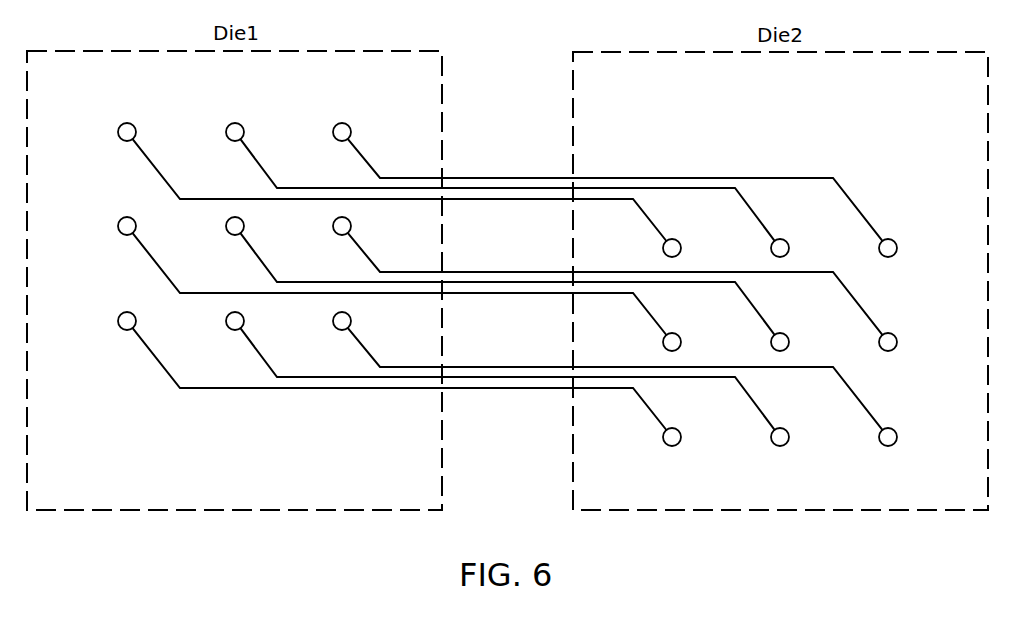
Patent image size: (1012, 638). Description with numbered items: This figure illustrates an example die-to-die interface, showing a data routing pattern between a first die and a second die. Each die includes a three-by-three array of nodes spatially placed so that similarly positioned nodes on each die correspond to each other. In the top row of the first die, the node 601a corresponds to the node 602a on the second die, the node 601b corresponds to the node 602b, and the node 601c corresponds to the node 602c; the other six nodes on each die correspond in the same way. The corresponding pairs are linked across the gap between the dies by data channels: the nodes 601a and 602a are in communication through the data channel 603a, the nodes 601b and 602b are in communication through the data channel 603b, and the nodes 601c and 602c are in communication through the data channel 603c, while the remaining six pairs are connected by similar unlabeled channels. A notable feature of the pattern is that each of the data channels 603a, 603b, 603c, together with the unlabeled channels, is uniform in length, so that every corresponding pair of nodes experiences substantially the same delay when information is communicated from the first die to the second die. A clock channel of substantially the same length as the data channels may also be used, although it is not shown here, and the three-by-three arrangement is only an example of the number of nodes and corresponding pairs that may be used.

The node 601a is at (126, 122).
The node 601b is at (234, 122).
The node 601c is at (341, 122).
The node 602a is at (677, 239).
The node 602b is at (785, 239).
The node 602c is at (887, 239).
The data channel 603a is at (478, 177).
The data channel 603b is at (537, 188).
The data channel 603c is at (507, 202).